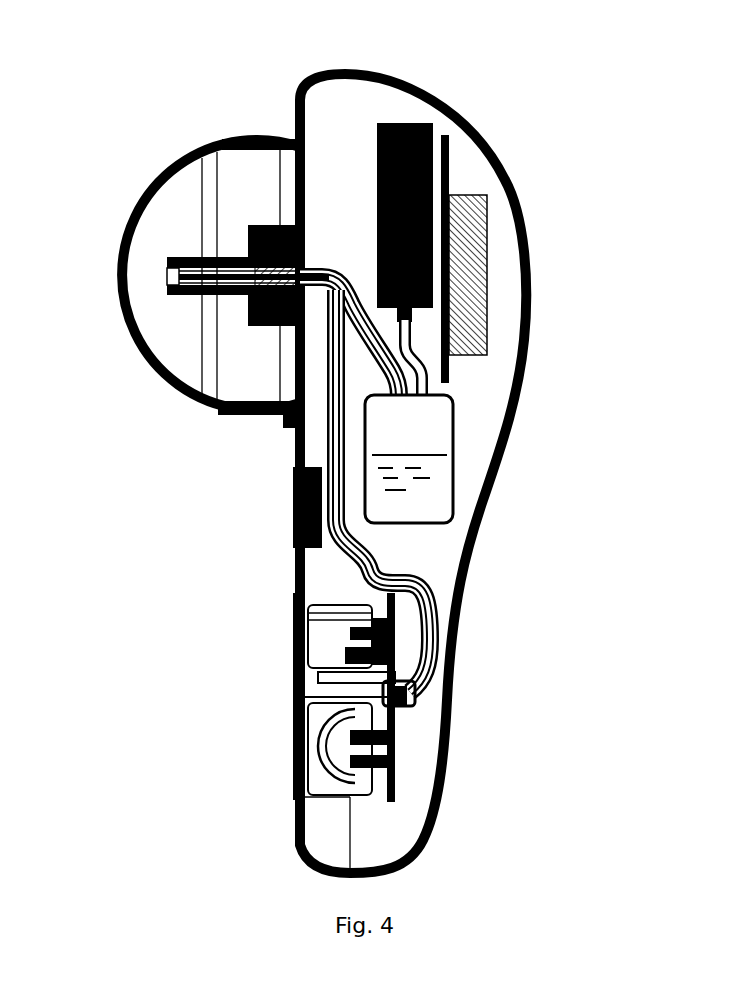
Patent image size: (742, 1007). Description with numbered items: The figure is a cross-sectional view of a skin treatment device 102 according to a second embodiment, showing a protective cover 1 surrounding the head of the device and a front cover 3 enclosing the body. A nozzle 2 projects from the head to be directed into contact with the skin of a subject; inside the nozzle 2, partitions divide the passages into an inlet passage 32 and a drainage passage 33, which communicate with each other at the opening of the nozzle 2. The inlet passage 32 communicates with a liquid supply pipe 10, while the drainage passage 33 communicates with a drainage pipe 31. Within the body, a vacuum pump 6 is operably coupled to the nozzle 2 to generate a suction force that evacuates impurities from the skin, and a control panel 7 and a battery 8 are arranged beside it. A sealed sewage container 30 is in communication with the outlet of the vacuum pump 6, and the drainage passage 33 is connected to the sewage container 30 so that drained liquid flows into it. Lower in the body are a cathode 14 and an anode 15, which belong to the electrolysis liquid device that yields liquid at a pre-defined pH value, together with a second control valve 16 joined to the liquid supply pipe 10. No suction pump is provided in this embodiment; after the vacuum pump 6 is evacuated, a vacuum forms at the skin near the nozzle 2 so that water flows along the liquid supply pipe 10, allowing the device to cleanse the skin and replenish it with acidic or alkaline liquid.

The skin treatment device 102 is at (575, 107).
The protective cover 1 is at (127, 260).
The front cover 3 is at (285, 137).
The nozzle 2 is at (185, 256).
The drainage passage 33 is at (172, 288).
The inlet passage 32 is at (205, 297).
The vacuum pump 6 is at (470, 193).
The control panel 7 is at (449, 260).
The battery 8 is at (470, 325).
The drainage pipe 31 is at (428, 388).
The sewage container 30 is at (425, 443).
The liquid supply pipe 10 is at (380, 578).
The cathode 14 is at (347, 650).
The anode 15 is at (350, 747).
The second control valve 16 is at (410, 697).